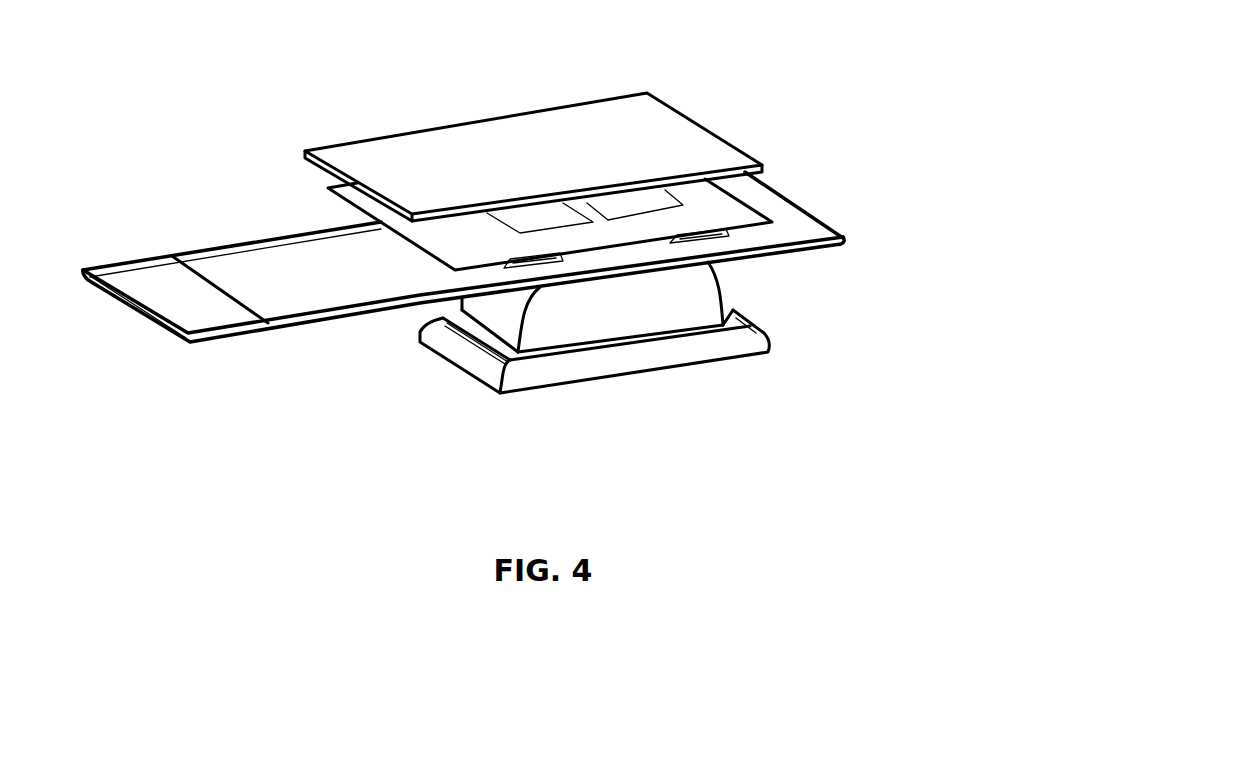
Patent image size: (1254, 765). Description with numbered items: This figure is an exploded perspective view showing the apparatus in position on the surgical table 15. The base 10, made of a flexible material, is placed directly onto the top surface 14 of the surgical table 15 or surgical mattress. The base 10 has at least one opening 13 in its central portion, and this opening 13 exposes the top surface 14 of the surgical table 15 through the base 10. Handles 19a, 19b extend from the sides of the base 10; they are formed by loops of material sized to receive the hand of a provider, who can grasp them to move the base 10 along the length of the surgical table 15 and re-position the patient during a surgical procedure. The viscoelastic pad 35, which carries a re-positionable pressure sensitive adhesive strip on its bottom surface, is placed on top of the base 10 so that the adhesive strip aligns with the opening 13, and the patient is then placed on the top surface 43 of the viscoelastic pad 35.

The viscoelastic pad 35 is at (378, 115).
The top surface 43 is at (373, 172).
The opening 13 is at (643, 203).
The base 10 is at (449, 257).
The top surface 14 is at (305, 287).
The surgical table 15 is at (314, 336).
The handle 19a is at (705, 242).
The handle 19b is at (535, 265).